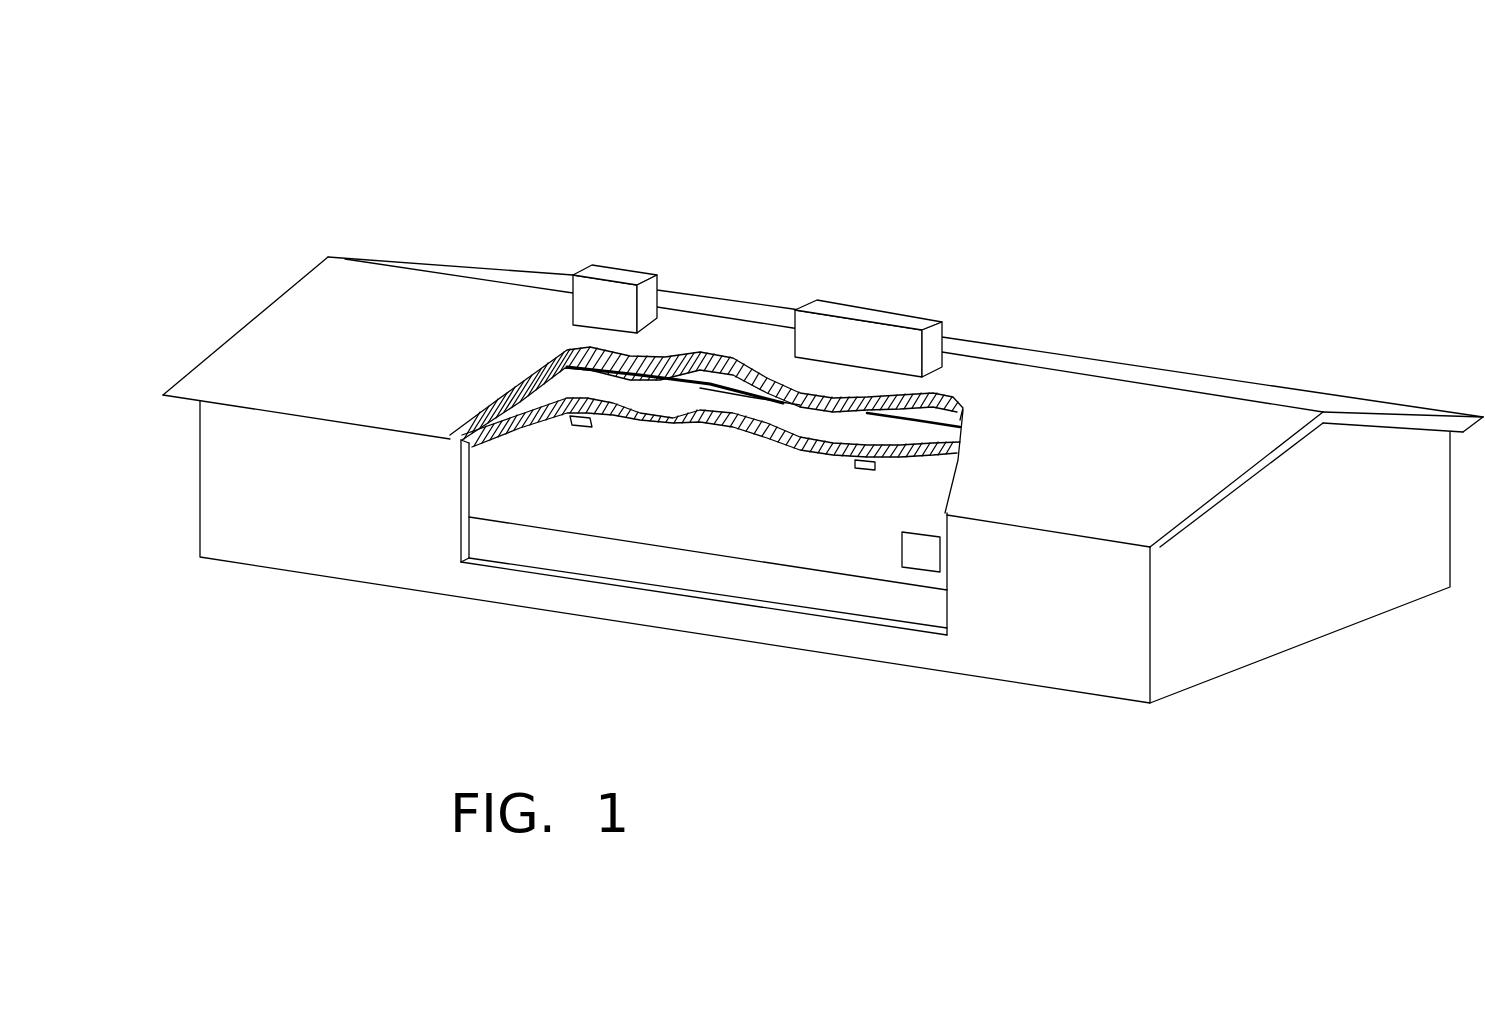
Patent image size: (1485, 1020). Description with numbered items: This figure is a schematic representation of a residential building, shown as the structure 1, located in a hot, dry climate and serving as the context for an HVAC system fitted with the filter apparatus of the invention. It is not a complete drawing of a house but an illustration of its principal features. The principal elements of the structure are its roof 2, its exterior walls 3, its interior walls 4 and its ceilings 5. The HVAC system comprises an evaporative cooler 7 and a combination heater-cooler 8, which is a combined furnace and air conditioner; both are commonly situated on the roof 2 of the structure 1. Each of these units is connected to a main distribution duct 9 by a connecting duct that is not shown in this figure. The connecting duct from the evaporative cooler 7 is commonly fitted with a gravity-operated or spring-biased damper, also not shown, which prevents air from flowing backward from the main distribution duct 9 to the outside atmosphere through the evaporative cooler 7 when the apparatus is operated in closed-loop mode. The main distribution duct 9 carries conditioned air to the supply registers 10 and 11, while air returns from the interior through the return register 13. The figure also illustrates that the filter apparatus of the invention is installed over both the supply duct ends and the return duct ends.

The structure 1 is at (1213, 113).
The roof 2 is at (1140, 382).
The exterior walls 3 is at (1105, 700).
The interior walls 4 is at (677, 527).
The ceilings 5 is at (503, 440).
The evaporative cooler 7 is at (613, 265).
The combination heater-cooler 8 is at (845, 297).
The main distribution duct 9 is at (718, 367).
The supply register 10 is at (583, 427).
The supply register 11 is at (863, 470).
The return register 13 is at (913, 568).